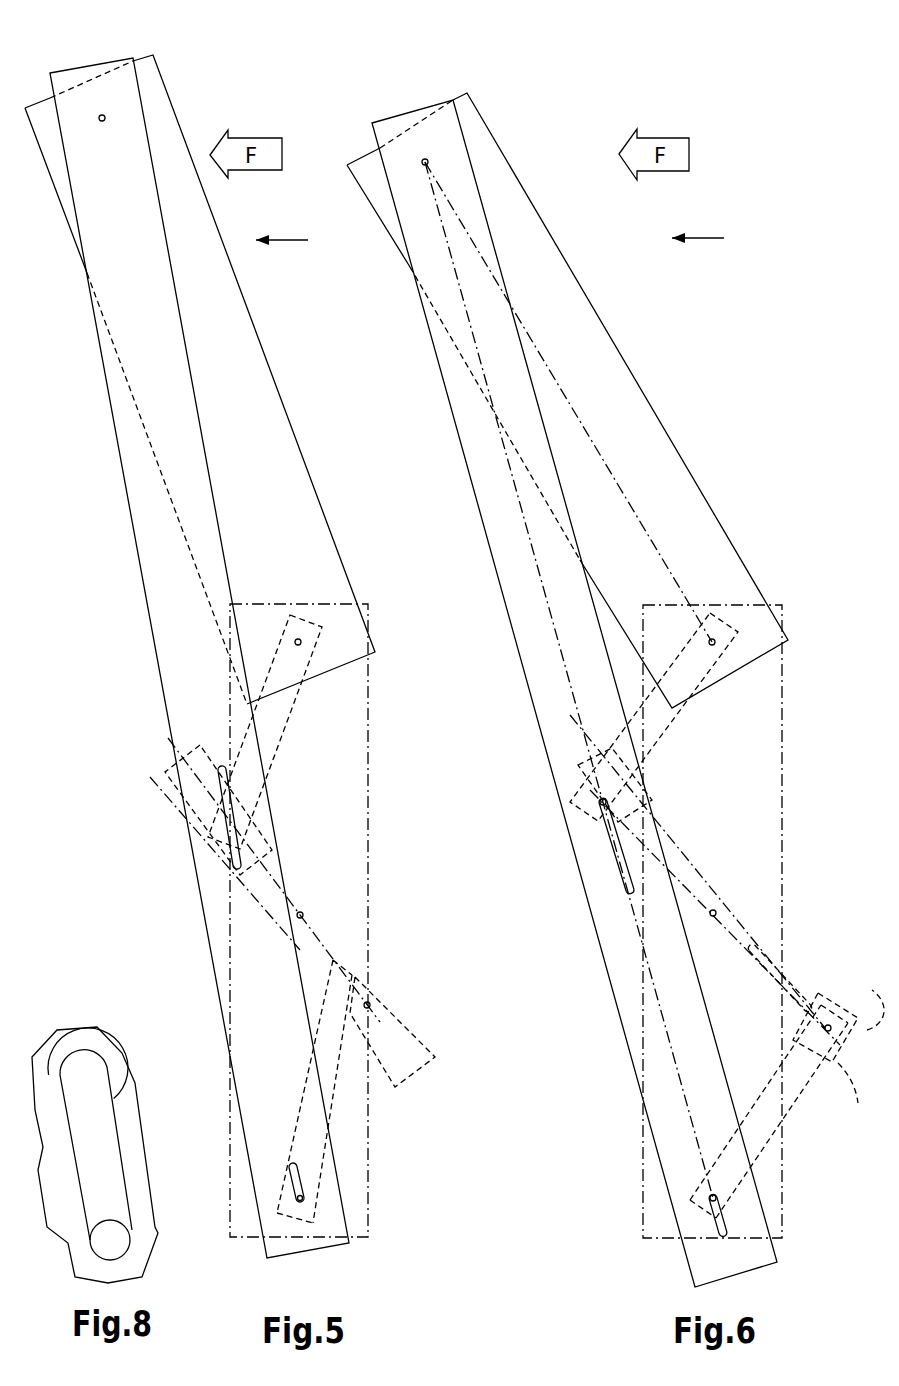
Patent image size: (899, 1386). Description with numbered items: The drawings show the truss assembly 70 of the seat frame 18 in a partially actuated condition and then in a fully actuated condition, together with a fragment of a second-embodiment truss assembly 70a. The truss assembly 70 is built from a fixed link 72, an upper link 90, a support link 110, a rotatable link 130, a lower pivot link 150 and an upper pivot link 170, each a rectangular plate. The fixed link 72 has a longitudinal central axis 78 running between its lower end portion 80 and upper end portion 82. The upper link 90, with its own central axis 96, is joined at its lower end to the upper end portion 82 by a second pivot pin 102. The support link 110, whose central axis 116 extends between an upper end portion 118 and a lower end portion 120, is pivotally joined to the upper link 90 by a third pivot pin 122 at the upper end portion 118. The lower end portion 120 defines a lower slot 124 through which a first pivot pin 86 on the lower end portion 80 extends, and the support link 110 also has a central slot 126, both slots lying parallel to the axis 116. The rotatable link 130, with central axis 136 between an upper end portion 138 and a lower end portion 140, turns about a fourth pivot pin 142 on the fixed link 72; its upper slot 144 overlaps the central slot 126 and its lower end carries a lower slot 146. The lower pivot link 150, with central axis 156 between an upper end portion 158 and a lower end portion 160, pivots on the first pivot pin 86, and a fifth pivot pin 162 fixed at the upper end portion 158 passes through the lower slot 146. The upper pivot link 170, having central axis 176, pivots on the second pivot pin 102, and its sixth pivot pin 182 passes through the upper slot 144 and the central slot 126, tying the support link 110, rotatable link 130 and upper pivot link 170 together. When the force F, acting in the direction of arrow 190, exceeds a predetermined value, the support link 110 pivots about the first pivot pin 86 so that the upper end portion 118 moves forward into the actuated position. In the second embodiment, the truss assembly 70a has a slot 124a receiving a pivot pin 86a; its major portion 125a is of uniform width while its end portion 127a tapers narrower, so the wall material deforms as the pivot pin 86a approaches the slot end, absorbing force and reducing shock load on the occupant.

In FIG. 6, the seat frame 18 is at (714, 368).
In FIG. 5, the truss assembly 70 is at (135, 645).
In FIG. 6, the truss assembly 70 is at (716, 455).
In FIG. 8, the truss assembly 70a is at (148, 1240).
In FIG. 5, the fixed link 72 is at (371, 790).
In FIG. 6, the fixed link 72 is at (785, 768).
In FIG. 6, the longitudinal central axis 78 is at (715, 1093).
In FIG. 6, the lower end portion 80 is at (784, 1197).
In FIG. 6, the upper end portion 82 is at (784, 685).
In FIG. 5, the first pivot pin 86 is at (297, 1197).
In FIG. 6, the first pivot pin 86 is at (711, 1200).
In FIG. 8, the pivot pin 86a is at (107, 1238).
In FIG. 5, the upper link 90 is at (282, 398).
In FIG. 6, the upper link 90 is at (555, 236).
In FIG. 6, the longitudinal central axis 96 is at (600, 450).
In FIG. 5, the second pivot pin 102 is at (303, 636).
In FIG. 6, the second pivot pin 102 is at (715, 637).
In FIG. 5, the support link 110 is at (122, 467).
In FIG. 6, the support link 110 is at (489, 208).
In FIG. 6, the longitudinal central axis 116 is at (532, 540).
In FIG. 5, the upper end portion 118 is at (75, 62).
In FIG. 6, the upper end portion 118 is at (390, 118).
In FIG. 6, the lower end portion 120 is at (717, 1265).
In FIG. 5, the third pivot pin 122 is at (106, 118).
In FIG. 6, the third pivot pin 122 is at (429, 160).
In FIG. 5, the lower slot 124 is at (295, 1172).
In FIG. 6, the lower slot 124 is at (737, 1223).
In FIG. 8, the slot 124a is at (120, 1152).
In FIG. 8, the major portion 125a is at (108, 1100).
In FIG. 5, the central slot 126 is at (234, 905).
In FIG. 6, the central slot 126 is at (618, 872).
In FIG. 8, the end portion 127a is at (52, 1062).
In FIG. 5, the rotatable link 130 is at (280, 936).
In FIG. 6, the rotatable link 130 is at (725, 880).
In FIG. 6, the longitudinal central axis 136 is at (737, 933).
In FIG. 5, the upper end portion 138 is at (203, 750).
In FIG. 6, the upper end portion 138 is at (582, 770).
In FIG. 5, the lower end portion 140 is at (417, 1072).
In FIG. 6, the lower end portion 140 is at (843, 1072).
In FIG. 5, the fourth pivot pin 142 is at (303, 912).
In FIG. 6, the fourth pivot pin 142 is at (716, 910).
In FIG. 5, the upper slot 144 is at (185, 778).
In FIG. 6, the upper slot 144 is at (645, 805).
In FIG. 5, the lower slot 146 is at (405, 1017).
In FIG. 6, the lower slot 146 is at (822, 958).
In FIG. 5, the lower pivot link 150 is at (300, 1132).
In FIG. 6, the lower pivot link 150 is at (794, 1120).
In FIG. 6, the longitudinal central axis 156 is at (773, 1143).
In FIG. 6, the upper end portion 158 is at (868, 1030).
In FIG. 5, the lower end portion 160 is at (317, 1213).
In FIG. 6, the lower end portion 160 is at (703, 1182).
In FIG. 5, the fifth pivot pin 162 is at (372, 1002).
In FIG. 6, the fifth pivot pin 162 is at (826, 1018).
In FIG. 5, the upper pivot link 170 is at (286, 740).
In FIG. 6, the upper pivot link 170 is at (666, 749).
In FIG. 6, the longitudinal central axis 176 is at (647, 714).
In FIG. 5, the sixth pivot pin 182 is at (233, 885).
In FIG. 6, the sixth pivot pin 182 is at (601, 801).
In FIG. 5, the arrow 190 is at (296, 238).
In FIG. 6, the arrow 190 is at (712, 237).